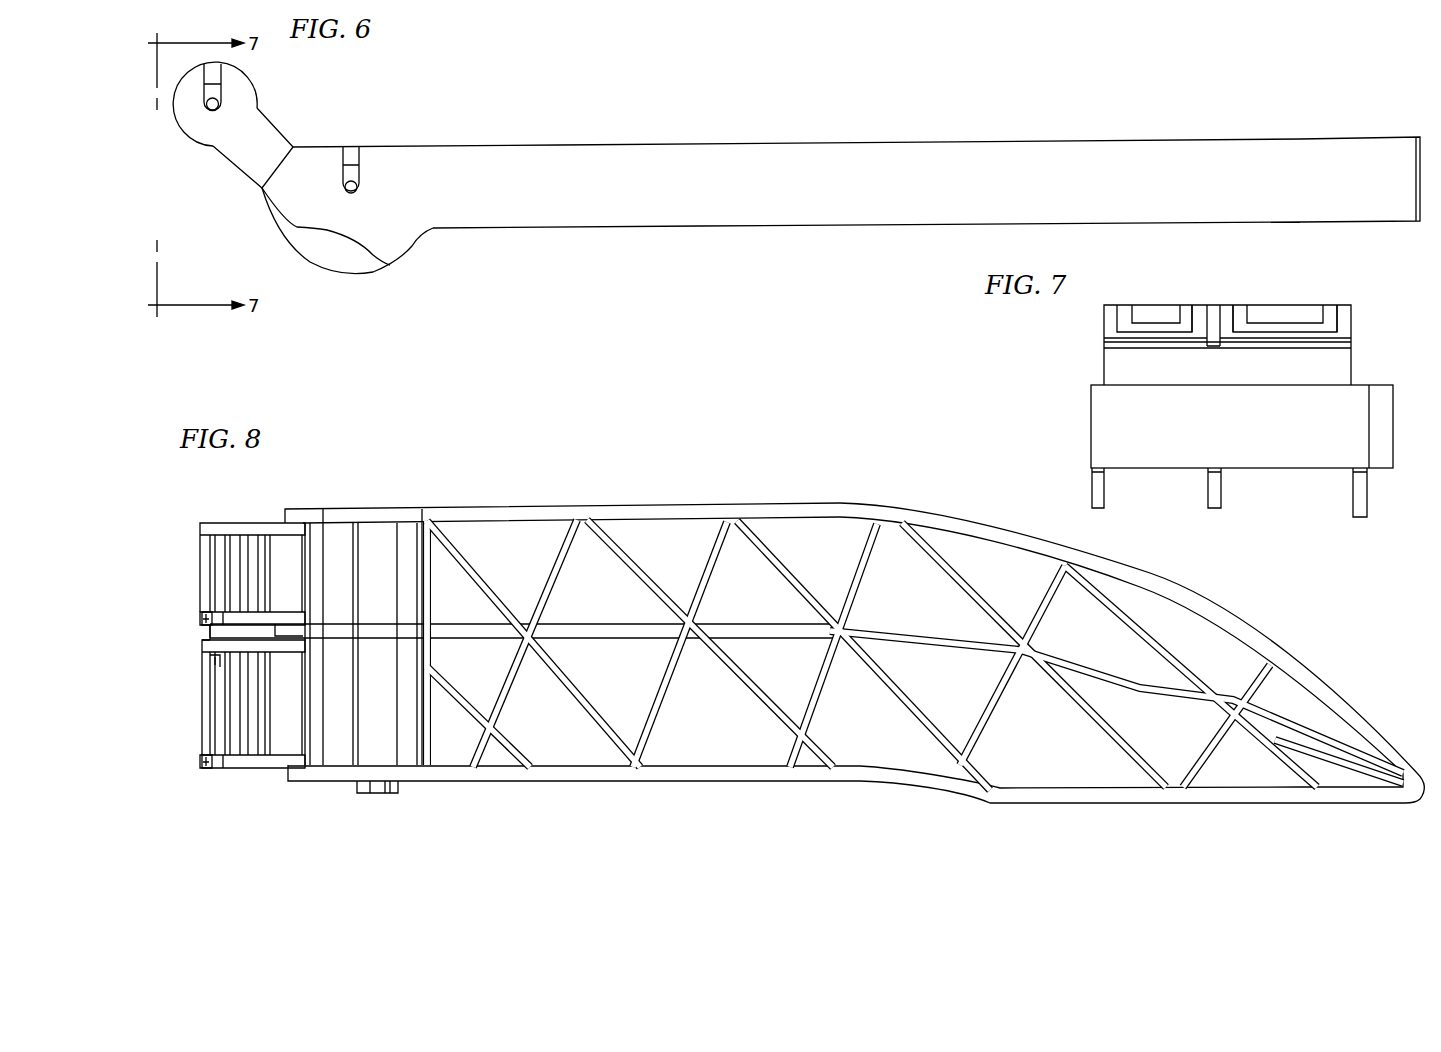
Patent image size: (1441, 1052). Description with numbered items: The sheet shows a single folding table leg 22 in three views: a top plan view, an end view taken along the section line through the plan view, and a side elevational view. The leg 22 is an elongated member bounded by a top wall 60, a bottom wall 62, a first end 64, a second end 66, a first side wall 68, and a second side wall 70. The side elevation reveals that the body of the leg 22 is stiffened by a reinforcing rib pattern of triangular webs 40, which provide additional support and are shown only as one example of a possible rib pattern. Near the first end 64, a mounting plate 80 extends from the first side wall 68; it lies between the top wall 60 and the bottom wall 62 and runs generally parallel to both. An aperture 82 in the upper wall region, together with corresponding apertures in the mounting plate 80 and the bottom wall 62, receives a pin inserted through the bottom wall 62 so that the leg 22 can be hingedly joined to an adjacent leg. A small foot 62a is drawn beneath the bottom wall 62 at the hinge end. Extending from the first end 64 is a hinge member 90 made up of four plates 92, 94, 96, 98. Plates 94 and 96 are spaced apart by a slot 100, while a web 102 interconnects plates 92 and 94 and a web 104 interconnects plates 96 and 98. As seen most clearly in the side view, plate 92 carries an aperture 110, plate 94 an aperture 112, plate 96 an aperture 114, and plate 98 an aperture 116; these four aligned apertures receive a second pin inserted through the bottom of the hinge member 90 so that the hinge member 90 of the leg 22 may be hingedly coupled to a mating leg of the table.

In FIG. 6, the leg 22 is at (825, 123).
In FIG. 8, the leg 22 is at (793, 496).
In FIG. 8, the triangular webs 40 is at (918, 541).
In FIG. 6, the top wall 60 is at (671, 195).
In FIG. 7, the top wall 60 is at (1381, 385).
In FIG. 8, the top wall 60 is at (612, 505).
In FIG. 7, the bottom wall 62 is at (1090, 421).
In FIG. 8, the bottom wall 62 is at (710, 781).
In FIG. 8, the mounting foot 62a is at (398, 790).
In FIG. 6, the first end 64 is at (403, 144).
In FIG. 8, the first end 64 is at (386, 509).
In FIG. 6, the second end 66 is at (1400, 138).
In FIG. 8, the second end 66 is at (1300, 656).
In FIG. 6, the first side wall 68 is at (610, 230).
In FIG. 8, the first side wall 68 is at (759, 670).
In FIG. 6, the second side wall 70 is at (628, 142).
In FIG. 7, the mounting plate 80 is at (1218, 488).
In FIG. 8, the mounting plate 80 is at (378, 626).
In FIG. 6, the aperture 82 is at (350, 160).
In FIG. 6, the hinge member 90 is at (183, 146).
In FIG. 8, the hinge member 90 is at (259, 516).
In FIG. 6, the plate 92 is at (266, 130).
In FIG. 7, the plate 92 is at (1330, 318).
In FIG. 8, the plate 92 is at (200, 529).
In FIG. 7, the plate 94 is at (1227, 335).
In FIG. 8, the plate 94 is at (236, 616).
In FIG. 7, the plate 96 is at (1202, 312).
In FIG. 8, the plate 96 is at (240, 652).
In FIG. 7, the plate 98 is at (1108, 318).
In FIG. 8, the plate 98 is at (232, 770).
In FIG. 7, the slot 100 is at (1212, 312).
In FIG. 8, the slot 100 is at (210, 633).
In FIG. 8, the web 102 is at (260, 550).
In FIG. 8, the web 104 is at (260, 738).
In FIG. 6, the aperture 110 is at (226, 86).
In FIG. 8, the aperture 112 is at (200, 619).
In FIG. 8, the aperture 114 is at (216, 665).
In FIG. 8, the aperture 116 is at (200, 760).